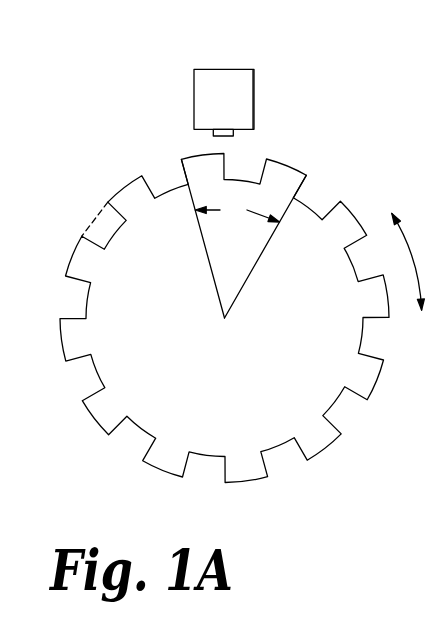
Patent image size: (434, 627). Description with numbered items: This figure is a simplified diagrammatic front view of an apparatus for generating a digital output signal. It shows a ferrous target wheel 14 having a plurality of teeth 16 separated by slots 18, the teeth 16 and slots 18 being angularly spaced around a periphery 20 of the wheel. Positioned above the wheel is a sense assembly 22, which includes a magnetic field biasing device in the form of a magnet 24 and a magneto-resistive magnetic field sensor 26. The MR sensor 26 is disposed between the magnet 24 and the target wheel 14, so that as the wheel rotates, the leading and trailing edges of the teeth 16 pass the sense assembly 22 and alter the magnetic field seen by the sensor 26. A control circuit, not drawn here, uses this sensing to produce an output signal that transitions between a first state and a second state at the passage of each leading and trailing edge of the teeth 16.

The ferrous target wheel 14 is at (328, 402).
The teeth 16 is at (181, 159).
The slots 18 is at (246, 155).
The periphery 20 is at (88, 196).
The sense assembly 22 is at (212, 75).
The magnet 24 is at (245, 70).
The magneto-resistive magnetic field sensor 26 is at (200, 132).